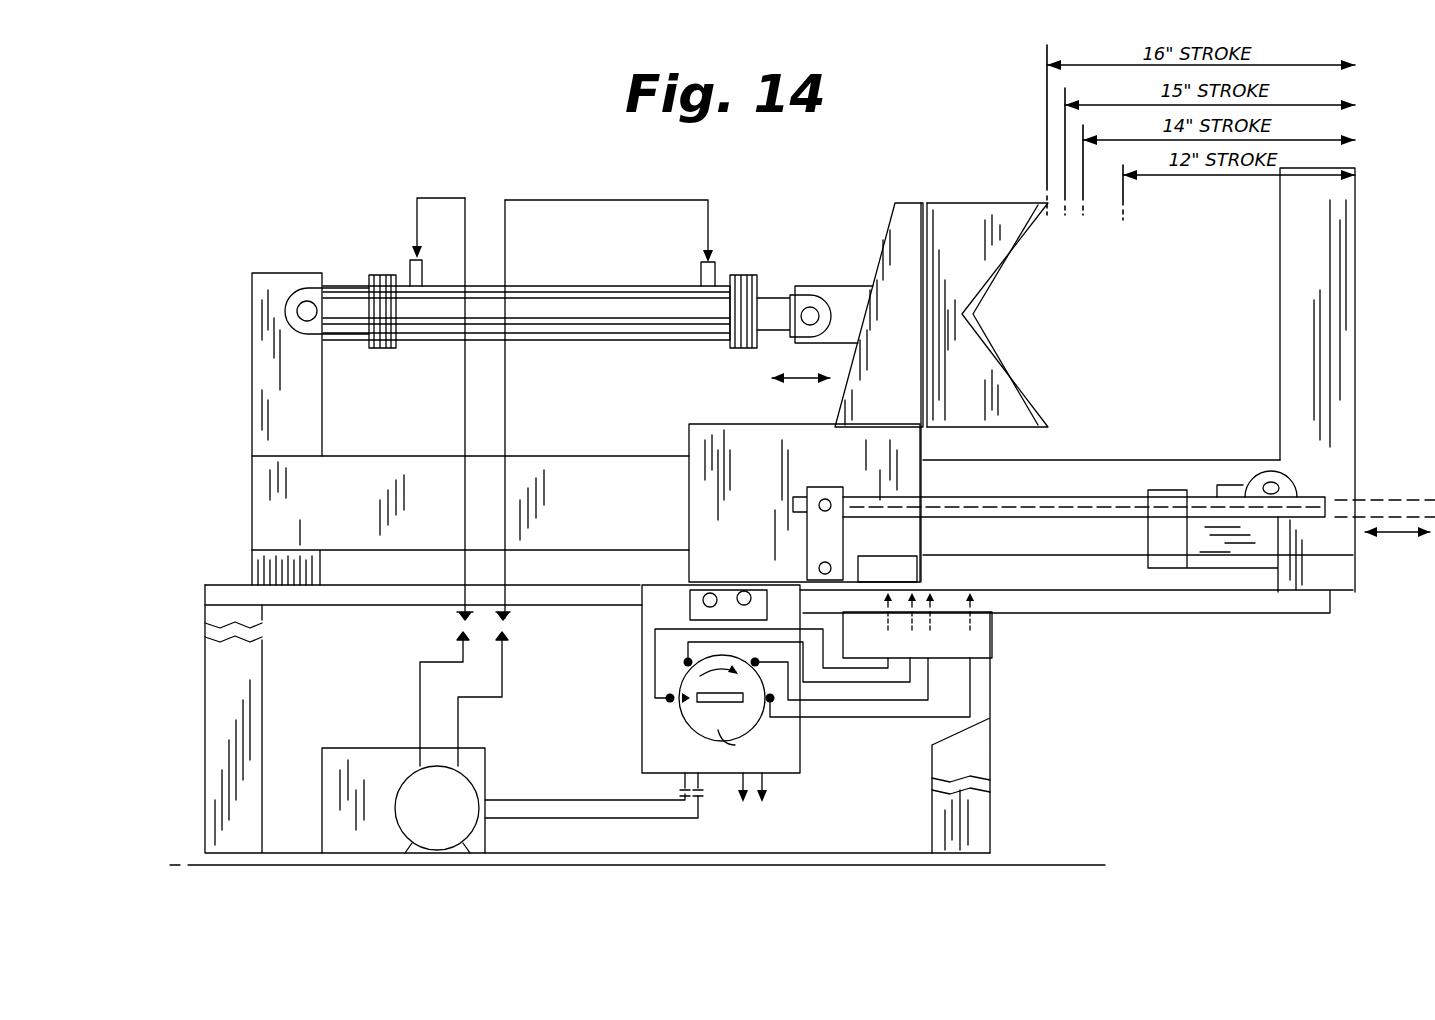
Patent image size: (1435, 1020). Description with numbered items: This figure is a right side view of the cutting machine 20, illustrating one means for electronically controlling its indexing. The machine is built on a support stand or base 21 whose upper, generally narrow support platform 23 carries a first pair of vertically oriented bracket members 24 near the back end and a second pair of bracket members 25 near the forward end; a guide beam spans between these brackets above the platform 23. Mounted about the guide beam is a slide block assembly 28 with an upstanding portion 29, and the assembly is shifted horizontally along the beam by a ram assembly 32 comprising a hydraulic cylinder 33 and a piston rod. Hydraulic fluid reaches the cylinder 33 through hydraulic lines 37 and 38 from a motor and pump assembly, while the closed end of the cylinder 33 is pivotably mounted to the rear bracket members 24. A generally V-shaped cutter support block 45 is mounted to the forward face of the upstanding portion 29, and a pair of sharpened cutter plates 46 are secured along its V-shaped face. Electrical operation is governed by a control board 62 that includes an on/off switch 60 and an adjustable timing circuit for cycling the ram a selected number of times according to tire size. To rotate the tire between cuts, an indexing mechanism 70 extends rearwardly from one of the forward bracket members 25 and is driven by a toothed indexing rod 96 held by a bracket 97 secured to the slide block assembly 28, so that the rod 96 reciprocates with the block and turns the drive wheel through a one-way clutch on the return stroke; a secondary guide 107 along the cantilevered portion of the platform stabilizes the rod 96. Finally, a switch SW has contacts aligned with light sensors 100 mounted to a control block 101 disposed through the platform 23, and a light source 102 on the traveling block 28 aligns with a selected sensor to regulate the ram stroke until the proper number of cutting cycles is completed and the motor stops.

The cutting machine 20 is at (800, 284).
The support stand or base 21 is at (388, 605).
The support platform 23 is at (538, 598).
The bracket members 24 is at (252, 378).
The bracket members 25 is at (1280, 282).
The slide block assembly 28 is at (735, 424).
The upstanding portion 29 is at (893, 240).
The ram assembly 32 is at (521, 293).
The hydraulic cylinder 33 is at (597, 340).
The hydraulic line 37 is at (463, 428).
The hydraulic line 38 is at (503, 428).
The cutter support block 45 is at (938, 182).
The cutter plates 46 is at (990, 338).
The on/off switch 60 is at (737, 583).
The control board 62 is at (643, 692).
The indexing mechanism 70 is at (1268, 473).
The indexing rod 96 is at (1040, 494).
The bracket 97 is at (822, 487).
The light sensors 100 is at (970, 608).
The control block 101 is at (992, 660).
The light source 102 is at (893, 580).
The secondary guide 107 is at (1148, 527).